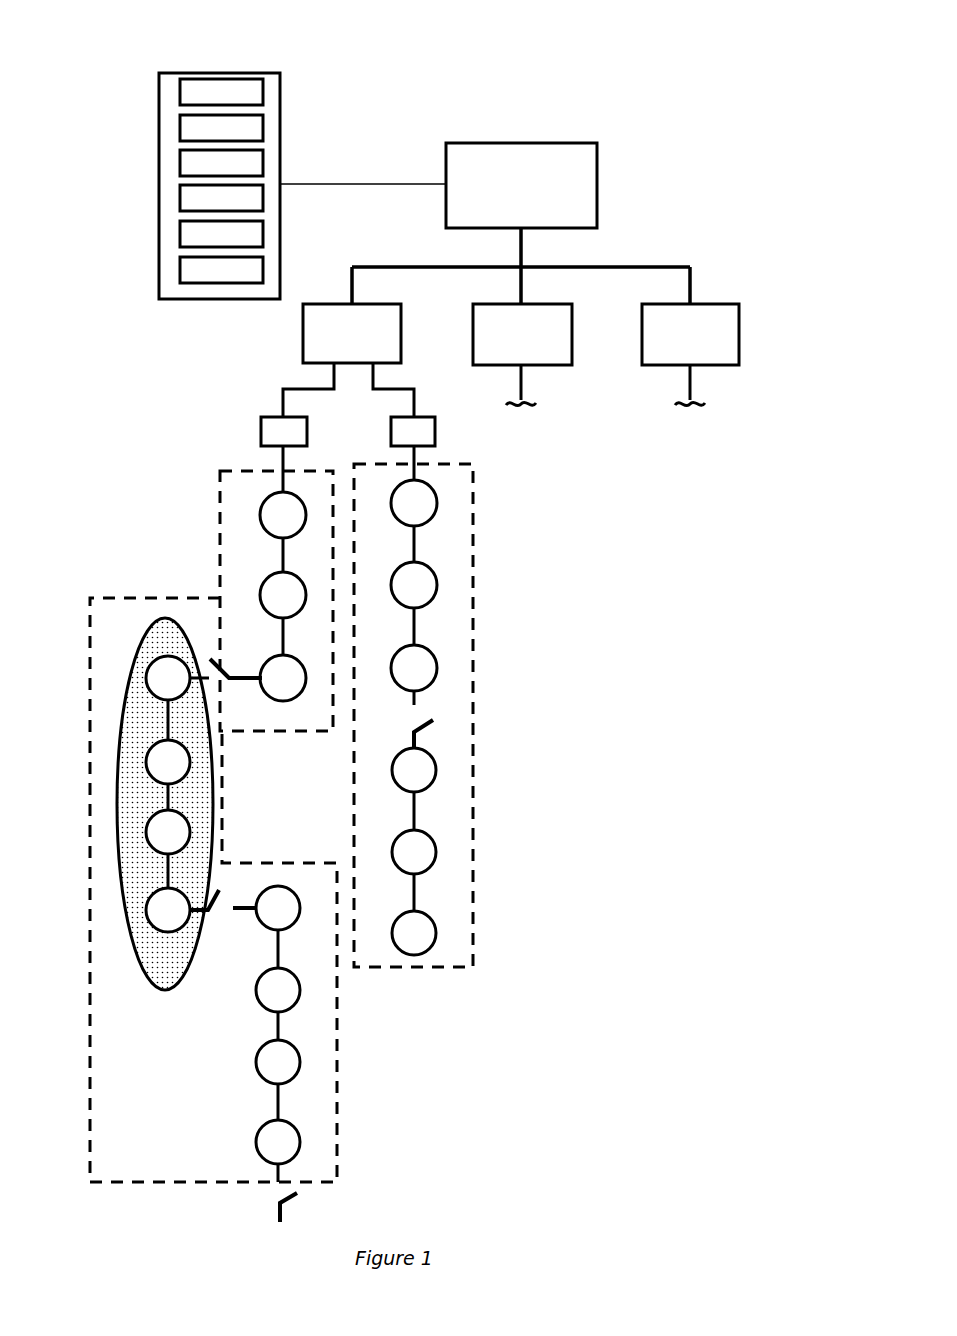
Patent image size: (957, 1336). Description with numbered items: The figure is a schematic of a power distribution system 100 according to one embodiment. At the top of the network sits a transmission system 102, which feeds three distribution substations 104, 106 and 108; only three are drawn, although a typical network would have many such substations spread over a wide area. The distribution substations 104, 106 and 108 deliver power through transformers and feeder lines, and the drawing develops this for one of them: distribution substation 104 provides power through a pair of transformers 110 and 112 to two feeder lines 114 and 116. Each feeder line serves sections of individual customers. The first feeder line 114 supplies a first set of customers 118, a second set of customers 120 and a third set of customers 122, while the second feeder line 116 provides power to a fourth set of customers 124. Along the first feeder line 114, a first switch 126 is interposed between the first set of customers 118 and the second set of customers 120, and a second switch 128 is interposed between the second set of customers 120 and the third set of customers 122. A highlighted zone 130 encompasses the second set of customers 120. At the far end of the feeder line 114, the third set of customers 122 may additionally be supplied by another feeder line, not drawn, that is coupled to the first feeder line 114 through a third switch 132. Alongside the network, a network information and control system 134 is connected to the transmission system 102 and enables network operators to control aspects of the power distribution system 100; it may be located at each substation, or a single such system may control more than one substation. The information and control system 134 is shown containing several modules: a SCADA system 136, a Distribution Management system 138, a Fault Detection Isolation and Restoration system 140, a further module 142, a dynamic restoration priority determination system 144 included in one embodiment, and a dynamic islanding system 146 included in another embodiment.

The power distribution system 100 is at (436, 44).
The transmission system 102 is at (597, 184).
The distribution substation 104 is at (303, 333).
The distribution substation 106 is at (572, 333).
The distribution substation 108 is at (739, 333).
The transformer 110 is at (258, 432).
The transformer 112 is at (435, 433).
The feeder line 114 is at (235, 470).
The feeder line 116 is at (457, 464).
The first set of customers 118 is at (260, 678).
The second set of customers 120 is at (146, 678).
The third set of customers 122 is at (300, 908).
The fourth set of customers 124 is at (437, 503).
The first switch 126 is at (213, 682).
The second switch 128 is at (223, 912).
The zone 130 is at (130, 663).
The third switch 132 is at (302, 1193).
The network information and control system 134 is at (218, 73).
The SCADA system 136 is at (180, 92).
The Distribution Management system 138 is at (180, 128).
The Fault Detection Isolation and Restoration (FDIR) system 140 is at (180, 163).
The fourth module 142 is at (180, 198).
The dynamic restoration priority determination system 144 is at (180, 234).
The dynamic islanding system 146 is at (180, 270).